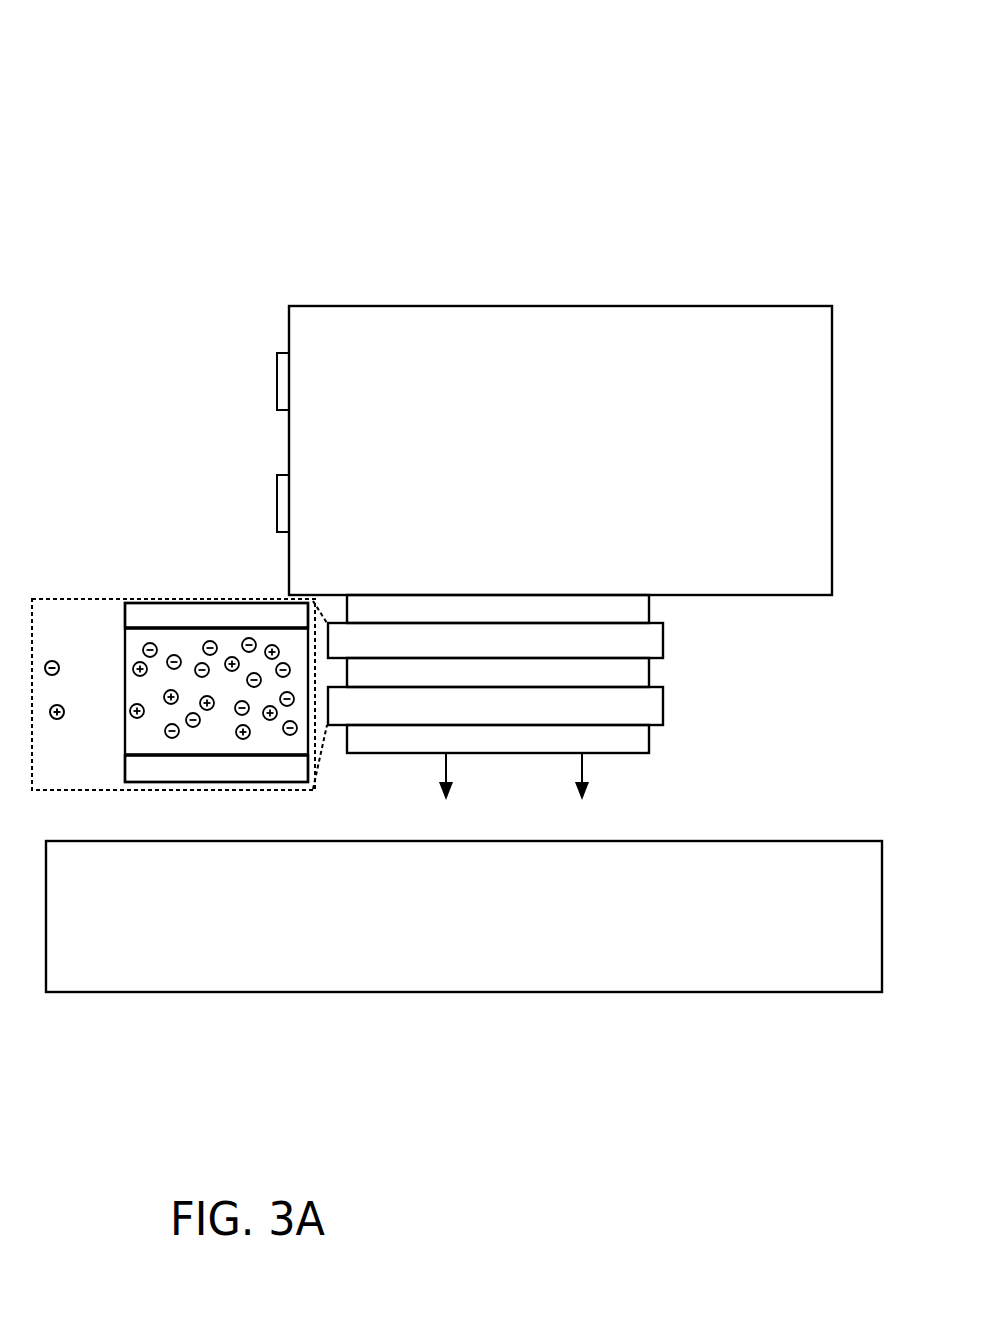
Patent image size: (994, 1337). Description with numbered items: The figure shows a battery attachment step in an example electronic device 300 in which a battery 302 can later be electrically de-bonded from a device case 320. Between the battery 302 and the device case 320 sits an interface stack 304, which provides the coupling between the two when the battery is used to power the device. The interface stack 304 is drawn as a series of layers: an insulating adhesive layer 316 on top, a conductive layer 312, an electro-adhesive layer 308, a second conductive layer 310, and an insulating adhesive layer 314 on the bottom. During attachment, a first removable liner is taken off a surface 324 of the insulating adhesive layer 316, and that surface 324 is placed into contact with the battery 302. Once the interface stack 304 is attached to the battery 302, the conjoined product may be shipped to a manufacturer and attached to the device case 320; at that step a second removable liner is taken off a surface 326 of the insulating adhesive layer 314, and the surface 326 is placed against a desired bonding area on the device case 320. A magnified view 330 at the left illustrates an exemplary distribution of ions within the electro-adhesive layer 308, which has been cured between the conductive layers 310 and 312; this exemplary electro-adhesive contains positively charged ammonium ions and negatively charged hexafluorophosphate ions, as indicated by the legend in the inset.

The electronic device 300 is at (222, 61).
The battery 302 is at (594, 497).
The interface stack 304 is at (538, 686).
The electro-adhesive layer 308 is at (649, 675).
The conductive layer 310 is at (663, 703).
The conductive layer 312 is at (663, 642).
The insulating adhesive layer 314 is at (649, 735).
The insulating adhesive layer 316 is at (649, 607).
The device case 320 is at (94, 902).
The surface of insulating adhesive layer 324 is at (611, 575).
The surface of insulating adhesive layer 326 is at (615, 773).
The magnified view 330 is at (103, 599).